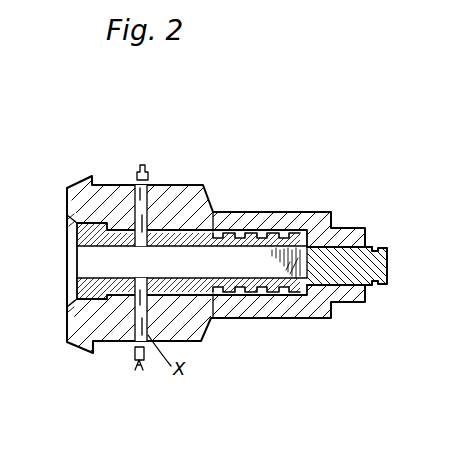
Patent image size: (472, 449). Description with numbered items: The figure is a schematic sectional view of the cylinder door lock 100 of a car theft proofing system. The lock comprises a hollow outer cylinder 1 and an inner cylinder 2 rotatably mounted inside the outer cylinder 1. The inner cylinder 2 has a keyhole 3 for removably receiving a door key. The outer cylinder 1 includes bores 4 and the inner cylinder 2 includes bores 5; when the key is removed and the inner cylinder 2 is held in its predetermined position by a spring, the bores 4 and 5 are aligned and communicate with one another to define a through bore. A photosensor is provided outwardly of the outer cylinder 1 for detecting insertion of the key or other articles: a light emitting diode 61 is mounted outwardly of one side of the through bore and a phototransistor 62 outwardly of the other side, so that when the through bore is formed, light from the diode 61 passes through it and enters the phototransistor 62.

The cylinder door lock 100 is at (342, 209).
The outer cylinder 1 is at (205, 208).
The inner cylinder 2 is at (281, 230).
The keyhole 3 is at (270, 268).
The bores 4 is at (148, 222).
The bores 5 is at (133, 278).
The light emitting diode 61 is at (138, 163).
The phototransistor 62 is at (133, 352).